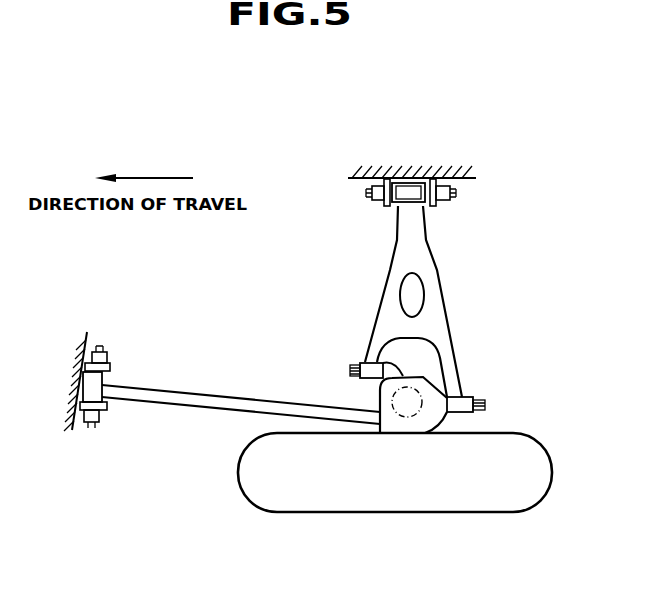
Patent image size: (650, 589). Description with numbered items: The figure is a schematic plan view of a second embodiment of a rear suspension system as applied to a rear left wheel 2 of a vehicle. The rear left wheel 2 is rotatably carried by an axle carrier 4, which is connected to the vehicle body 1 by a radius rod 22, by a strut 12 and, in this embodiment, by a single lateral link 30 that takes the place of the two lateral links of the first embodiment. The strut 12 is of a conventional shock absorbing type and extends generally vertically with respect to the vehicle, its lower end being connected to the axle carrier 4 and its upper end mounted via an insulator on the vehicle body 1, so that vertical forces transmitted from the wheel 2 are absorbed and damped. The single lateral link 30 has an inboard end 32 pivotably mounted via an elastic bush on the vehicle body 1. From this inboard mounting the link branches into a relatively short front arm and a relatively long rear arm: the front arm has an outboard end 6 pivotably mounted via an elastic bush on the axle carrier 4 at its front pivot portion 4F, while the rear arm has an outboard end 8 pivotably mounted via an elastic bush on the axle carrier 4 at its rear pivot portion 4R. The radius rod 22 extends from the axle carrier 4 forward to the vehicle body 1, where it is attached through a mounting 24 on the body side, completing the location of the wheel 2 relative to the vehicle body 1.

The vehicle body 1 is at (476, 184).
The rear left wheel 2 is at (551, 460).
The axle carrier 4 is at (436, 358).
The front pivot portion 4F is at (390, 380).
The rear pivot portion 4R is at (435, 410).
The outboard end of front arm 6 is at (368, 368).
The outboard end of rear arm 8 is at (465, 402).
The strut 12 is at (393, 420).
The radius rod 22 is at (143, 400).
The rod bushing 24 is at (97, 380).
The single lateral link 30 is at (387, 289).
The inboard end 32 is at (403, 198).